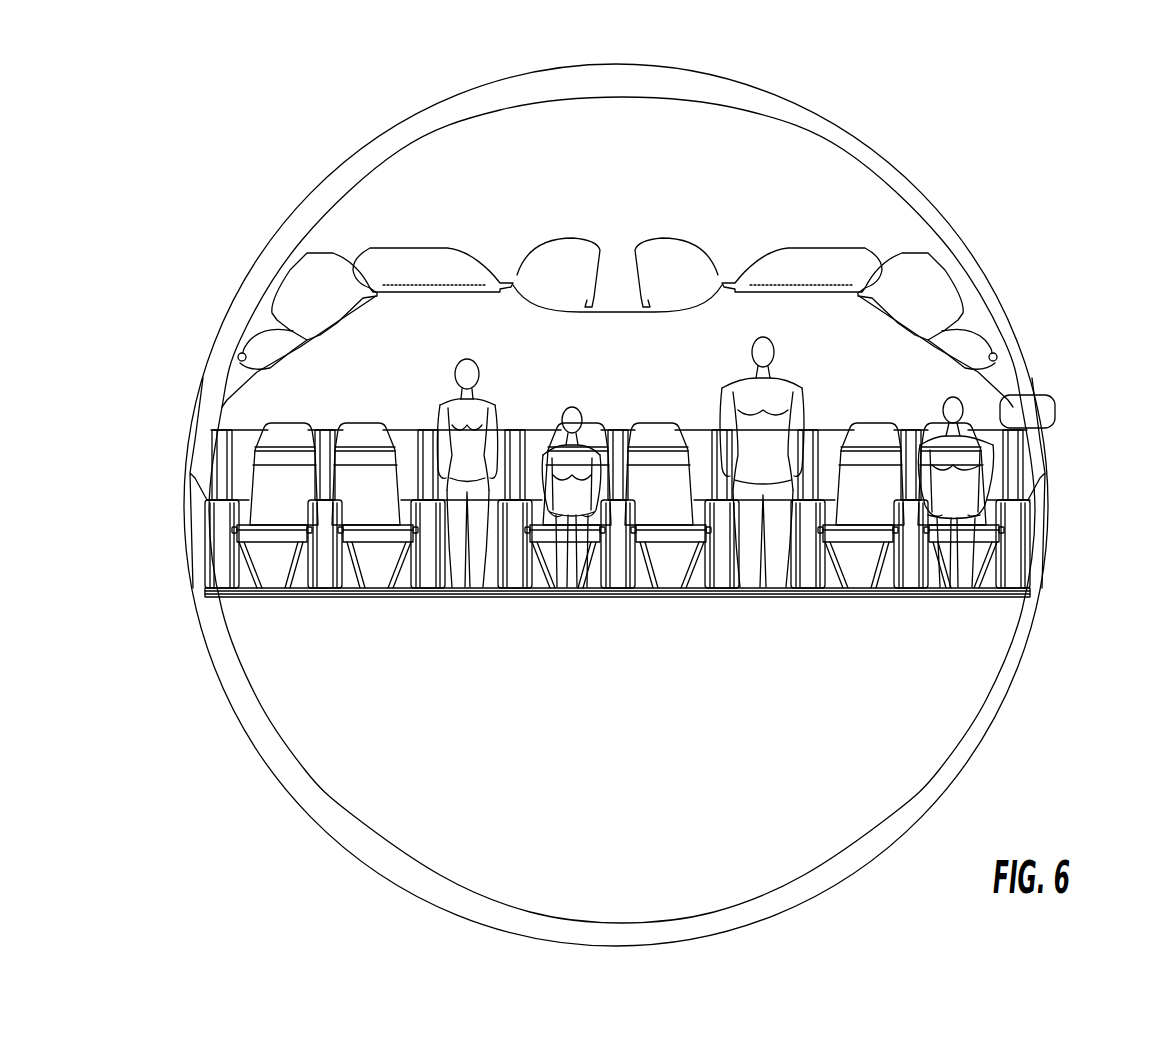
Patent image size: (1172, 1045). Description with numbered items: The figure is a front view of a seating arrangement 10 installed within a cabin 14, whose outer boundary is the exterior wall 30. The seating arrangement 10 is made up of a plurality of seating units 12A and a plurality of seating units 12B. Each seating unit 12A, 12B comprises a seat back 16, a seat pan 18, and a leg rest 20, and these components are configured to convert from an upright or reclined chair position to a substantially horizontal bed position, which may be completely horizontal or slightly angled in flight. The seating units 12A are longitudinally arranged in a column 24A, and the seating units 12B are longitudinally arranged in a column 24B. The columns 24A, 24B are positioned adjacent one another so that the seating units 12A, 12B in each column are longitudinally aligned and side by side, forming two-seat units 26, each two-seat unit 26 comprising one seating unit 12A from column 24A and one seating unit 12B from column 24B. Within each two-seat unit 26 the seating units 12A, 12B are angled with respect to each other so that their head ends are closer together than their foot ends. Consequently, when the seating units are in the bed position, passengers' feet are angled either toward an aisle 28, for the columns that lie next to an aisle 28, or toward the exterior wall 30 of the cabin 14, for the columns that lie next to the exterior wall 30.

The seating arrangement 10 is at (1080, 532).
The seating unit 12A is at (873, 440).
The seating unit 12B is at (957, 590).
The cabin 14 is at (895, 180).
The seat back 16 is at (272, 483).
The seat pan 18 is at (257, 527).
The leg rest 20 is at (262, 552).
The column 24A is at (290, 437).
The column 24B is at (367, 432).
The two-seat unit 26 is at (975, 605).
The aisle 28 is at (472, 592).
The exterior wall 30 is at (190, 452).